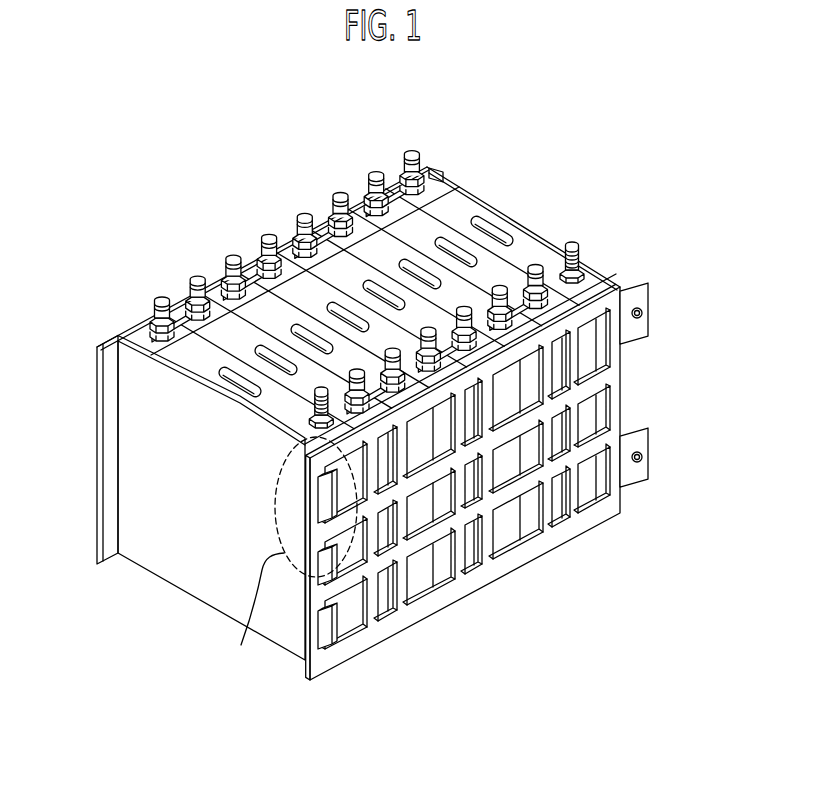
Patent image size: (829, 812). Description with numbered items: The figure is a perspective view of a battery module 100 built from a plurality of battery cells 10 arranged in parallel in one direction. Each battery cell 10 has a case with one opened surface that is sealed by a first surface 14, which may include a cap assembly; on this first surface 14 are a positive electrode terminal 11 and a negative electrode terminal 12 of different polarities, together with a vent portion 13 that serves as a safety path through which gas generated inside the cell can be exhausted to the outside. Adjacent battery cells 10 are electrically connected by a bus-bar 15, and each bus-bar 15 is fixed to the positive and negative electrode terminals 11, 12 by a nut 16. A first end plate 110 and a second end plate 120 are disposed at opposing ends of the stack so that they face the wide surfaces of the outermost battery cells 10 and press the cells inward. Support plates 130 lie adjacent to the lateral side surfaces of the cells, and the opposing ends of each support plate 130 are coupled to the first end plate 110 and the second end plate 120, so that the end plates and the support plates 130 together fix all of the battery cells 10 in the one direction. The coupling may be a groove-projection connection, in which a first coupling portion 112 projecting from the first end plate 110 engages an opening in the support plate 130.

The battery module 100 is at (641, 146).
The battery cell 10 is at (530, 527).
The positive electrode terminal 11 is at (412, 154).
The negative electrode terminal 12 is at (575, 242).
The vent portion 13 is at (492, 226).
The first surface 14 is at (538, 256).
The bus-bar 15 is at (181, 312).
The nut 16 is at (222, 263).
The first end plate 110 is at (197, 531).
The first coupling portion 112 is at (328, 500).
The second end plate 120 is at (469, 186).
The support plate 130 is at (95, 337).